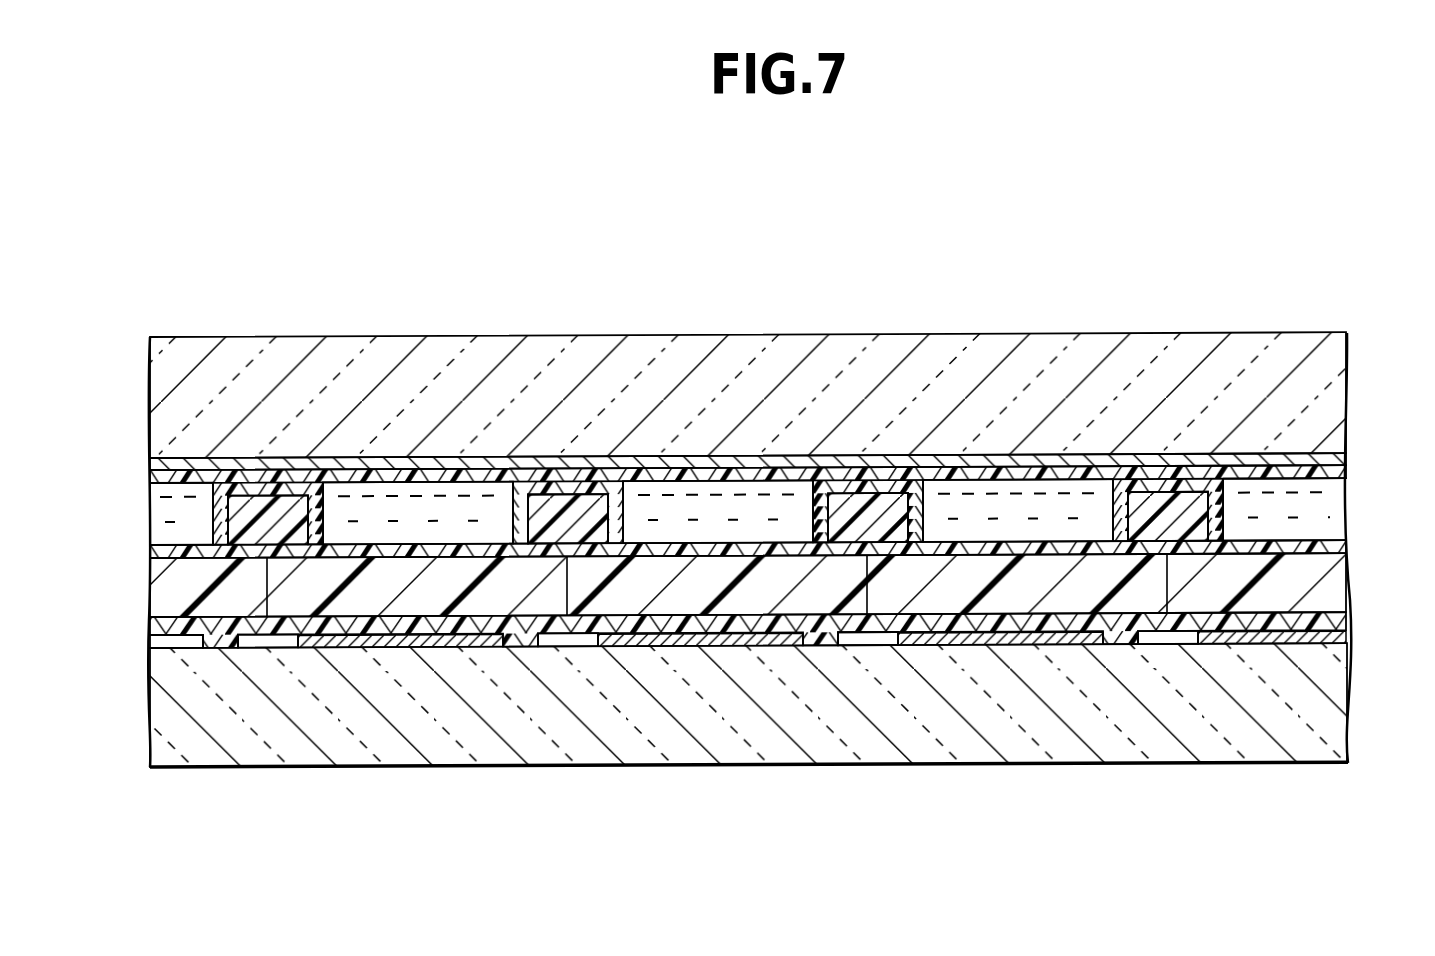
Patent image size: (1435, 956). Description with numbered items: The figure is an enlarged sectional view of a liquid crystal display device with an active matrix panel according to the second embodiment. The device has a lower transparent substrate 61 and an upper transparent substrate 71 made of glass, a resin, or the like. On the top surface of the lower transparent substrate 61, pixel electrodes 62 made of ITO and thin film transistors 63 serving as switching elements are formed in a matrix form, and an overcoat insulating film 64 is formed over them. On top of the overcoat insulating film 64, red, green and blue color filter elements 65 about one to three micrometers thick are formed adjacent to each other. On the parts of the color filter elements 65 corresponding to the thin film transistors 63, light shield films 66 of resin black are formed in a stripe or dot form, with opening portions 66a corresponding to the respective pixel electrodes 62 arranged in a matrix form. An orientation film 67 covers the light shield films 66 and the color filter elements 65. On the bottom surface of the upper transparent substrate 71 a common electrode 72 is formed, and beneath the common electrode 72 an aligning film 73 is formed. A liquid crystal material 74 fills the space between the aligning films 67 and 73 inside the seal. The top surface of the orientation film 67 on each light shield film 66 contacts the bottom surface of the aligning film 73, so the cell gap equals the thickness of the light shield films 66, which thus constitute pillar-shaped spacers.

The lower transparent substrate 61 is at (190, 762).
The pixel electrodes 62 is at (397, 643).
The thin film transistors 63 is at (270, 645).
The overcoat insulating film 64 is at (1348, 620).
The color filter elements 65 is at (470, 608).
The light shield films 66 is at (277, 505).
The opening portions 66a is at (755, 488).
The orientation film 67 is at (1342, 548).
The upper transparent substrate 71 is at (182, 358).
The common electrode 72 is at (503, 466).
The aligning film 73 is at (410, 473).
The liquid crystal material 74 is at (1332, 502).